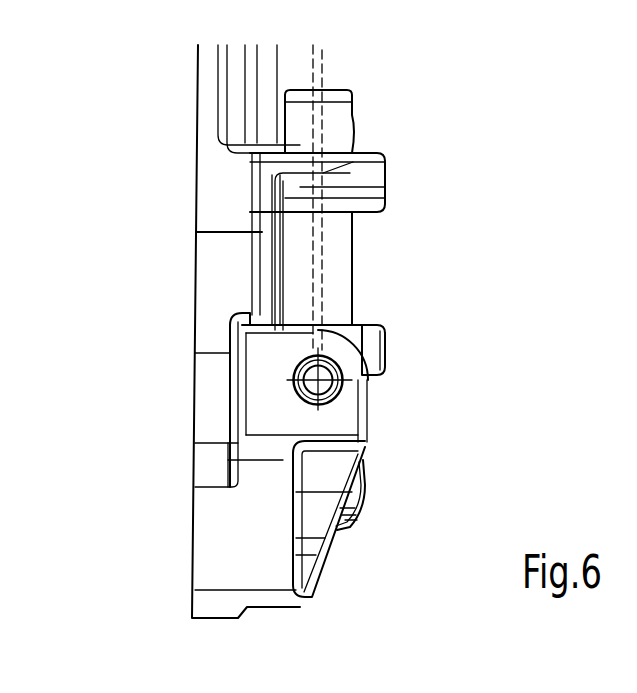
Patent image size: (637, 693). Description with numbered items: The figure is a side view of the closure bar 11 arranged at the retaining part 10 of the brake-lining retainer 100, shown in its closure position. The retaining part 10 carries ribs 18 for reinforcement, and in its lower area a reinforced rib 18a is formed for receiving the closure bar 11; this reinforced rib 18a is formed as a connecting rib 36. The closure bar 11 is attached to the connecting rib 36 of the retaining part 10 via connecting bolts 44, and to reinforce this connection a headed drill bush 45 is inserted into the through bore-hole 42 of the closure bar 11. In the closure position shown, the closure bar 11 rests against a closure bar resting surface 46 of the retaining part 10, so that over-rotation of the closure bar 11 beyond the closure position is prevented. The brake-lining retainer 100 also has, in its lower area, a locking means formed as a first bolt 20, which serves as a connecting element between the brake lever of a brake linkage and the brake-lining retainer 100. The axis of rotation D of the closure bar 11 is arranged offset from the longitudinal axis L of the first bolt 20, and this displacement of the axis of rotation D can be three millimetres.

The brake-lining retainer 100 is at (577, 37).
The retaining part 10 is at (196, 172).
The ribs 18 is at (387, 185).
The first bolt 20 is at (353, 245).
The longitudinal axis L is at (308, 305).
The connecting rib 36 is at (356, 321).
The reinforced rib 18a is at (368, 325).
The through bore-hole 42 is at (296, 363).
The connecting bolts 44 is at (340, 392).
The axis of rotation D is at (342, 390).
The headed drill bush 45 is at (302, 386).
The closure bar resting surface 46 is at (243, 383).
The closure bar 11 is at (318, 563).